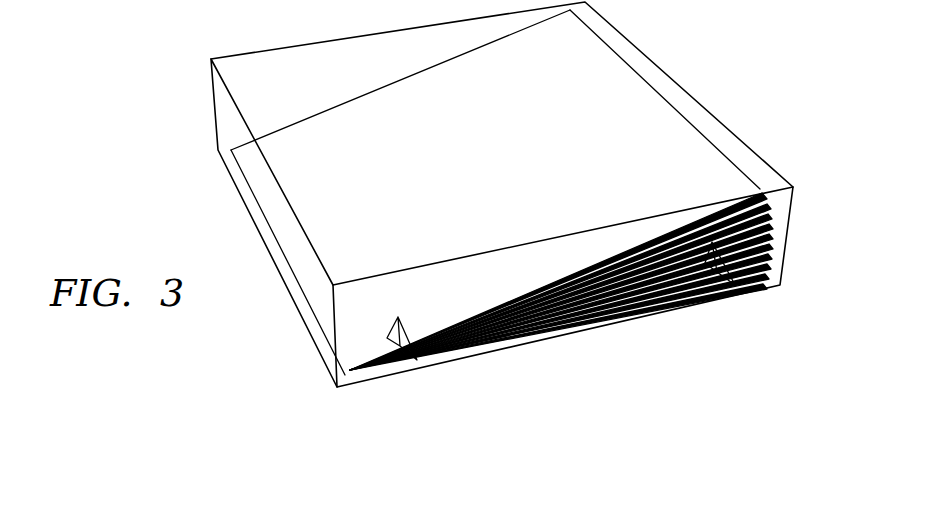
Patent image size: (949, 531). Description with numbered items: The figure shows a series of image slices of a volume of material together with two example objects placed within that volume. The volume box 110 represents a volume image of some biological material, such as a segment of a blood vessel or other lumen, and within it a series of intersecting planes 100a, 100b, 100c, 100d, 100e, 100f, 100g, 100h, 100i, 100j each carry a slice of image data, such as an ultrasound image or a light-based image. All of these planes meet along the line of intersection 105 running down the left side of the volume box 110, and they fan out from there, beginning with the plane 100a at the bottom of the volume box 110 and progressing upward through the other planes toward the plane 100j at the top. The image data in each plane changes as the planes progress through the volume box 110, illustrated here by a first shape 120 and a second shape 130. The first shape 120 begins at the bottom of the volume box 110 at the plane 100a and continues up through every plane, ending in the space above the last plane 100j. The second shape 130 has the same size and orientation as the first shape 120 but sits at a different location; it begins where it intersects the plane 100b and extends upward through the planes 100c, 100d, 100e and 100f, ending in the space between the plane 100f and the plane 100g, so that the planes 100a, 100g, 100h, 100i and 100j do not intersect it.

The line of intersection 105 is at (311, 308).
The volume box 110 is at (647, 52).
The first shape 120 is at (386, 350).
The second shape 130 is at (713, 279).
The plane 100a is at (766, 289).
The plane 100b is at (770, 279).
The plane 100c is at (772, 269).
The plane 100d is at (773, 258).
The plane 100e is at (774, 248).
The plane 100f is at (774, 237).
The plane 100g is at (774, 227).
The plane 100h is at (772, 216).
The plane 100i is at (772, 206).
The plane 100j is at (765, 188).